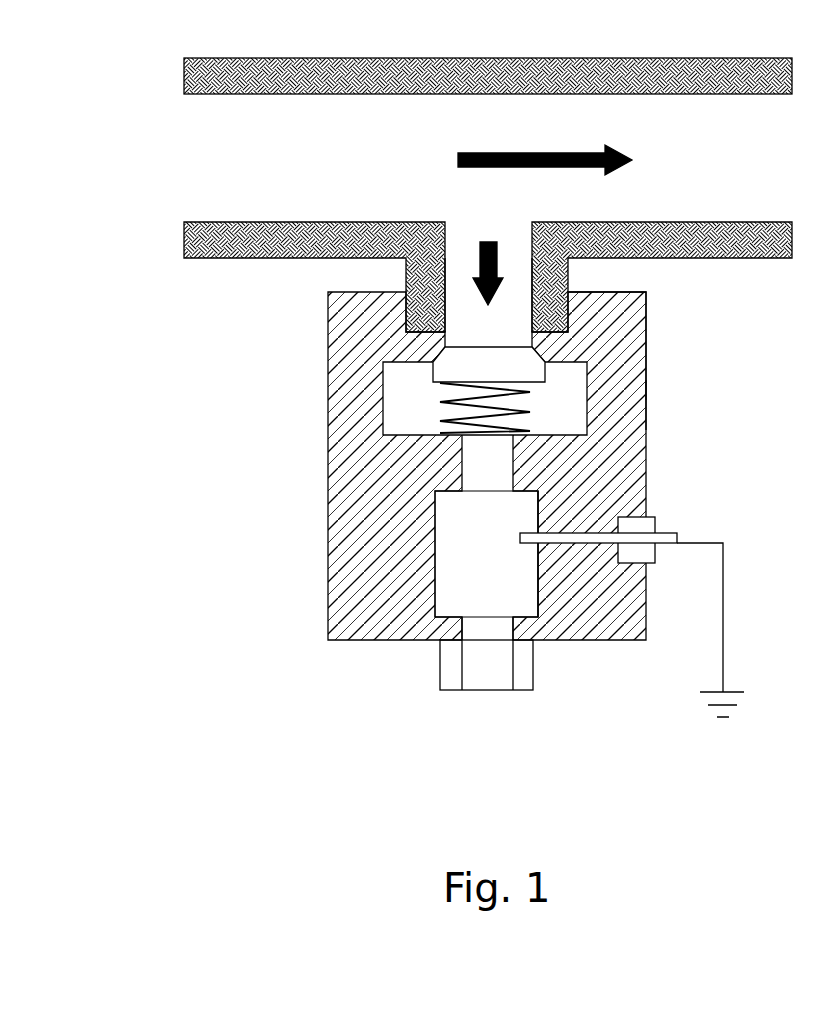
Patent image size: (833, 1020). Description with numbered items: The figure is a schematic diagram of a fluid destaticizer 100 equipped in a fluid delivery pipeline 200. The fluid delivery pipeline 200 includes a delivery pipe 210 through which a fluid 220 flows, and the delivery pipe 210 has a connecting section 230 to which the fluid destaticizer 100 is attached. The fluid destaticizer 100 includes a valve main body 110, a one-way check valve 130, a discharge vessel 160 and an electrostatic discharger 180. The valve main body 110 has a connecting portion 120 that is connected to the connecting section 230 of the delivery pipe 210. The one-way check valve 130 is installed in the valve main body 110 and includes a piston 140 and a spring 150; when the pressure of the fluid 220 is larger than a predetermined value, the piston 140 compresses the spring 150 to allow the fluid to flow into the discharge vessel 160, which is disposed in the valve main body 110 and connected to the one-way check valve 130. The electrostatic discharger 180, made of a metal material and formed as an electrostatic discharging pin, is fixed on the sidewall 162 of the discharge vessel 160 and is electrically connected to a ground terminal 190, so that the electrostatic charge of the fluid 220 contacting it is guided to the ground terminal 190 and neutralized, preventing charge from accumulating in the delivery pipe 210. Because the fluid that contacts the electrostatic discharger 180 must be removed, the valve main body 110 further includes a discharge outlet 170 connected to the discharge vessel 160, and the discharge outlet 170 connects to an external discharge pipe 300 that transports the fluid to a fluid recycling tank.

The fluid destaticizer 100 is at (464, 495).
The valve main body 110 is at (328, 483).
The connecting portion 120 is at (646, 312).
The one-way check valve 130 is at (665, 403).
The piston 140 is at (535, 362).
The spring 150 is at (437, 422).
The discharge vessel 160 is at (537, 505).
The sidewall 162 is at (538, 590).
The discharge outlet 170 is at (492, 630).
The electrostatic discharger 180 is at (677, 540).
The ground terminal 190 is at (742, 692).
The fluid delivery pipeline 200 is at (422, 170).
The delivery pipe 210 is at (550, 68).
The fluid 220 is at (485, 155).
The connecting section 230 is at (567, 286).
The external discharge pipe 300 is at (440, 670).